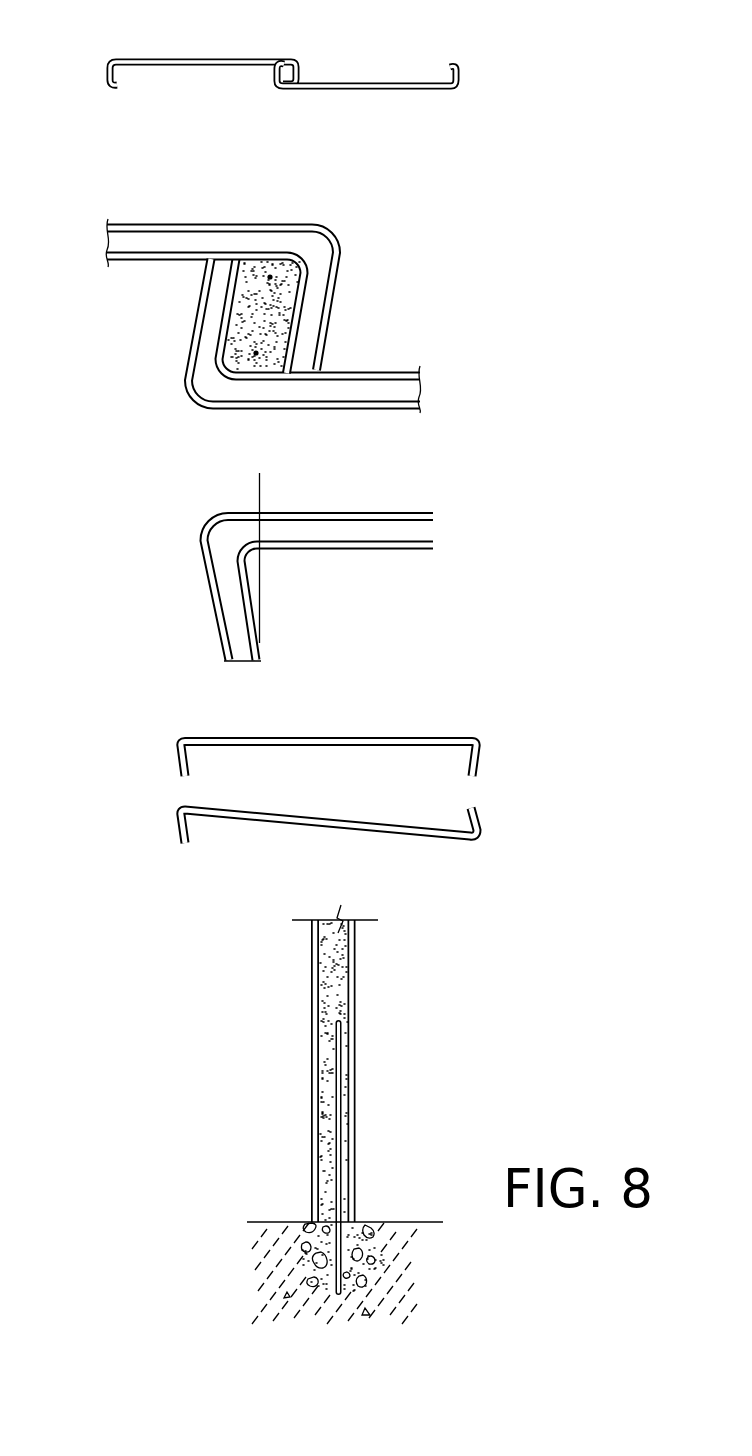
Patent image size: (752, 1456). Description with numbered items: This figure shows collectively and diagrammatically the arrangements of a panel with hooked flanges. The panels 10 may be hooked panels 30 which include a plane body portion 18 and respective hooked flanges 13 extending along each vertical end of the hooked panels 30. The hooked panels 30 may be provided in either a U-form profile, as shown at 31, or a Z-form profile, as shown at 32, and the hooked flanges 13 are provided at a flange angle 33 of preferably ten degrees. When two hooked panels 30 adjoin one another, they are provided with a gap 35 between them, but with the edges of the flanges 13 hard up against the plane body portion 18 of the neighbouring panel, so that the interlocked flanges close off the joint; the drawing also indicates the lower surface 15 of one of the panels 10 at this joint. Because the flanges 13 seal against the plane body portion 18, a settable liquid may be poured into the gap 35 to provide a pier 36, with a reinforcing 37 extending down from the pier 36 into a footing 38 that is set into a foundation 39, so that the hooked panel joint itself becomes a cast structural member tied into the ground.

The panel 10 is at (148, 62).
The hooked flange 13 is at (108, 72).
The panel bottom surface 15 is at (368, 90).
The plane body portion 18 is at (183, 67).
The hooked panel 30 is at (253, 35).
The U-form profile 31 is at (440, 738).
The Z-form profile 32 is at (417, 840).
The flange angle 33 is at (253, 608).
The gap 35 is at (281, 90).
The pier 36 is at (257, 353).
The reinforcing 37 is at (337, 1087).
The footing 38 is at (365, 1230).
The foundation 39 is at (287, 1233).